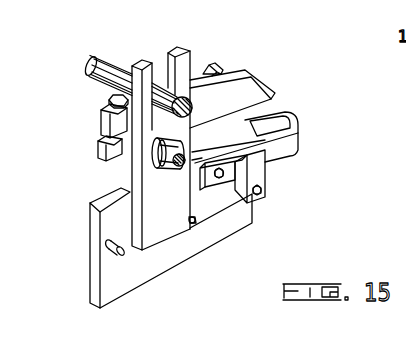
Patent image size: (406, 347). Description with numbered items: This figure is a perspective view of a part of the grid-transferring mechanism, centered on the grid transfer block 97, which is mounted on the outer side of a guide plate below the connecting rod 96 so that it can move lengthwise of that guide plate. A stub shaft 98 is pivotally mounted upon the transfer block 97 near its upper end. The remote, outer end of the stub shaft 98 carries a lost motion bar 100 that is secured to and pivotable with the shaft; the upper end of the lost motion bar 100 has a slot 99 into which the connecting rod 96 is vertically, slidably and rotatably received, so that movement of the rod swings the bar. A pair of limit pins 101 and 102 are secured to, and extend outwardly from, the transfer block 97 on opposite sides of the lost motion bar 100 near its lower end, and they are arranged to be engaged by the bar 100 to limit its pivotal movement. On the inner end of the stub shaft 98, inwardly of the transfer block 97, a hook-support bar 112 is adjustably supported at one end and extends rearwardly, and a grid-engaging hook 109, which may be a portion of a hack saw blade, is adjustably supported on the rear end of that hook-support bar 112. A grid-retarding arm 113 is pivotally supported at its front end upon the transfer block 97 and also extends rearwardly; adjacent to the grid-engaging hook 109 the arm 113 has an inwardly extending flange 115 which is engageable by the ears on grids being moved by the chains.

The connecting rod 96 is at (121, 68).
The grid transfer block 97 is at (157, 263).
The stub shaft 98 is at (176, 176).
The slot 99 is at (168, 63).
The lost motion bar 100 is at (181, 130).
The limit pin 101 is at (116, 248).
The limit pin 102 is at (212, 223).
The grid-engaging hook 109 is at (213, 64).
The hook-support bar 112 is at (240, 85).
The grid-retarding arm 113 is at (283, 150).
The flange 115 is at (273, 122).